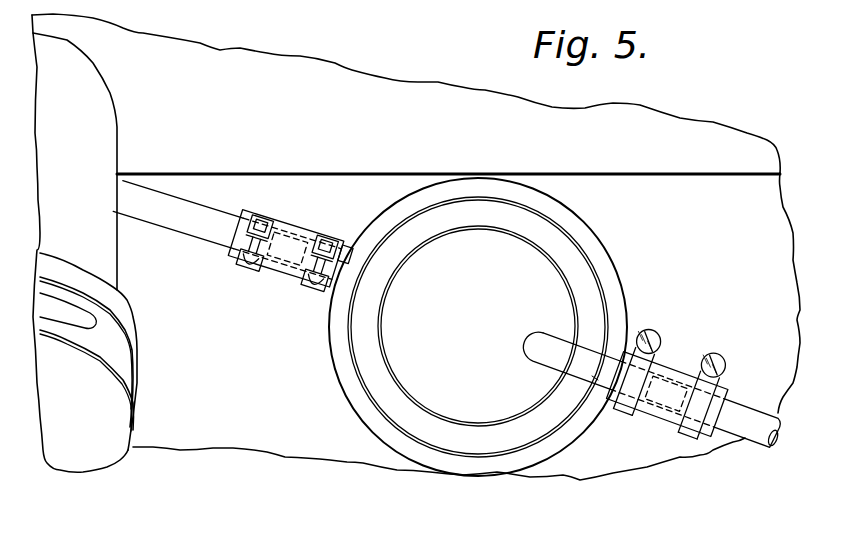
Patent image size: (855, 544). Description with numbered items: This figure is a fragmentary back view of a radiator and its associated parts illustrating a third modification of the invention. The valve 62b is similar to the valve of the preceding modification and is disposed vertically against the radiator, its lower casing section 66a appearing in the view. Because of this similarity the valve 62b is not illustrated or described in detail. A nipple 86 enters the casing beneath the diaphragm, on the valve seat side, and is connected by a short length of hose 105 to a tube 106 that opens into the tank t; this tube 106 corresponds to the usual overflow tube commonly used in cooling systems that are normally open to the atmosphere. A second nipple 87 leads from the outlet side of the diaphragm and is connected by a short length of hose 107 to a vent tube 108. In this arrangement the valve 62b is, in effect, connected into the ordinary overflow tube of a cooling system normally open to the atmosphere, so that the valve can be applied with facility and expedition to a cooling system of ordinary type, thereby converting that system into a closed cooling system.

The tank t is at (338, 74).
The valve 62b is at (368, 367).
The lower casing section 66a is at (578, 272).
The nipple 86 is at (345, 250).
The nipple 87 is at (593, 377).
The hose 105 is at (273, 273).
The tube 106 is at (180, 223).
The hose 107 is at (677, 372).
The vent tube 108 is at (754, 432).